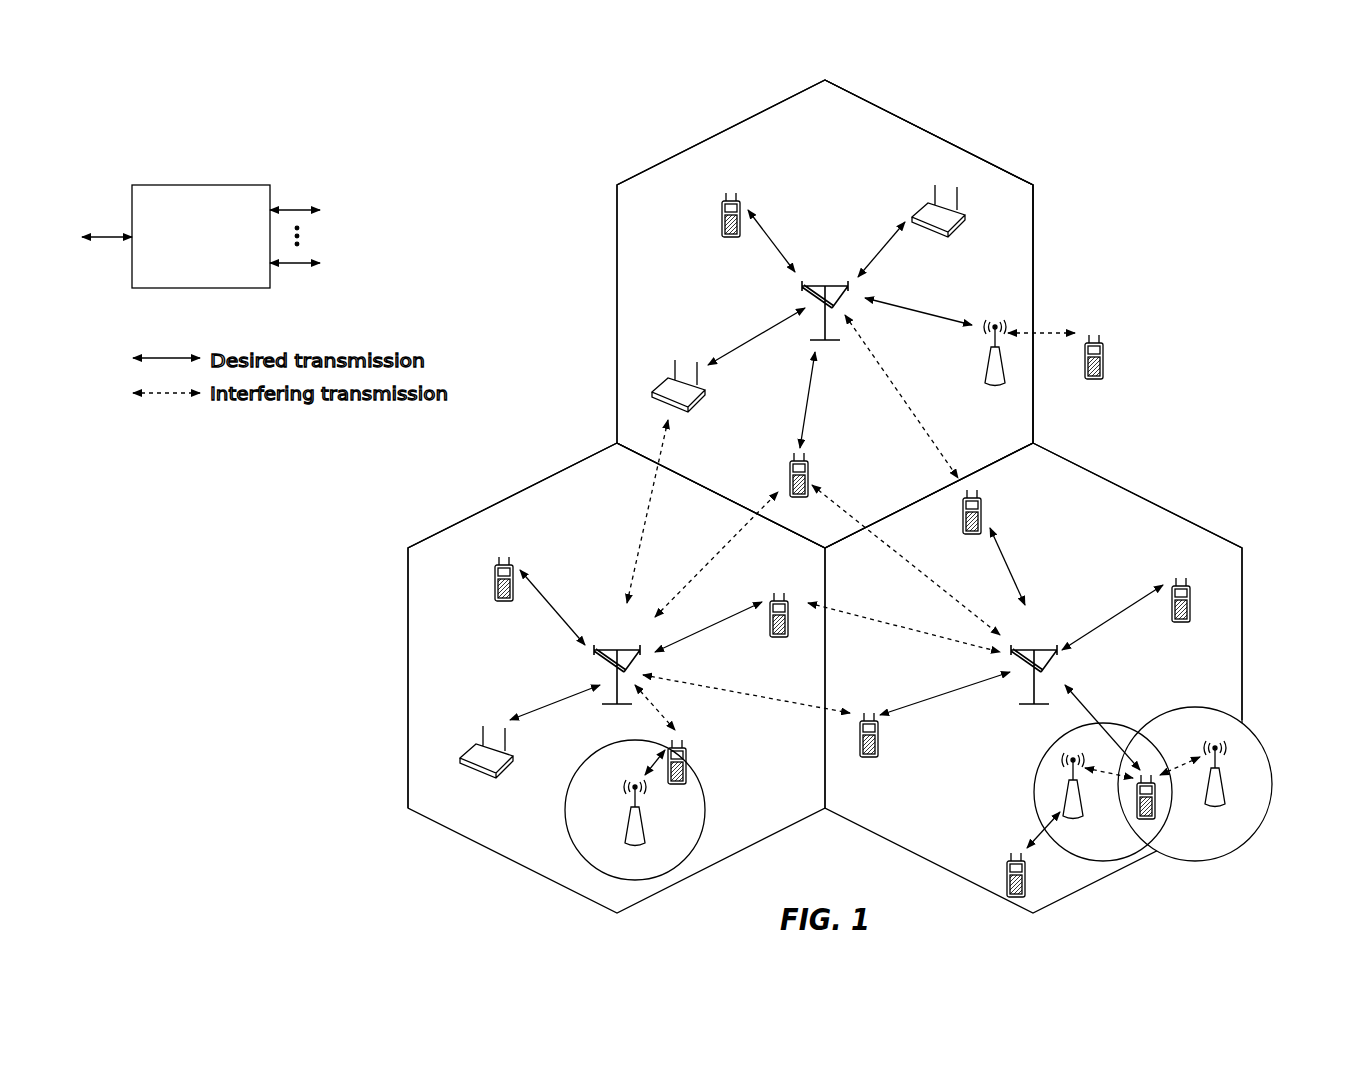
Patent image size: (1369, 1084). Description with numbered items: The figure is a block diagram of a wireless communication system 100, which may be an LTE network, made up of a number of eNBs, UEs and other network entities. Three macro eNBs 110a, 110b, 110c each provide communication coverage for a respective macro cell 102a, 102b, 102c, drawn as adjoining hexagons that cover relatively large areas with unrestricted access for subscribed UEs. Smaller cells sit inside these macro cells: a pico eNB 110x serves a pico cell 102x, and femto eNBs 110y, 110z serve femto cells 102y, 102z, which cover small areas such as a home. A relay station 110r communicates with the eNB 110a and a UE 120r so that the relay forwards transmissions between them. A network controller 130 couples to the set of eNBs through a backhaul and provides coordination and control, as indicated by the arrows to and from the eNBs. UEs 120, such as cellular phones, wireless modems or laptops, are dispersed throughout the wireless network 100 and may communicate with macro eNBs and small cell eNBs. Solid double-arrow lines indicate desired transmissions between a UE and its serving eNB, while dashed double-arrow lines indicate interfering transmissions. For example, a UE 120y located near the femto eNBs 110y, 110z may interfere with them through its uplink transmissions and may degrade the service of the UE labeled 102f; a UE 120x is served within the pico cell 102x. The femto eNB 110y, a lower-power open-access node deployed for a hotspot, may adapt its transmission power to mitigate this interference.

The wireless communication system 100 is at (1175, 148).
The macro cell 102a is at (930, 133).
The macro cell 102b is at (512, 497).
The macro cell 102c is at (1140, 497).
The pico cell 102x is at (587, 760).
The femto cell 102y is at (1040, 760).
The femto cell 102z is at (1196, 707).
The UE served by femto cell 102f is at (1007, 864).
The macro eNB 110a is at (827, 285).
The macro eNB 110b is at (635, 634).
The macro eNB 110c is at (1034, 649).
The relay station 110r is at (985, 366).
The pico eNB 110x is at (645, 838).
The femto eNB 110y is at (1083, 810).
The femto eNB 110z is at (1225, 800).
The UE 120 is at (722, 214).
The UE 120r is at (1102, 370).
The UE served by pico eNB 120x is at (688, 762).
The UE 120y is at (1137, 816).
The network controller 130 is at (198, 185).